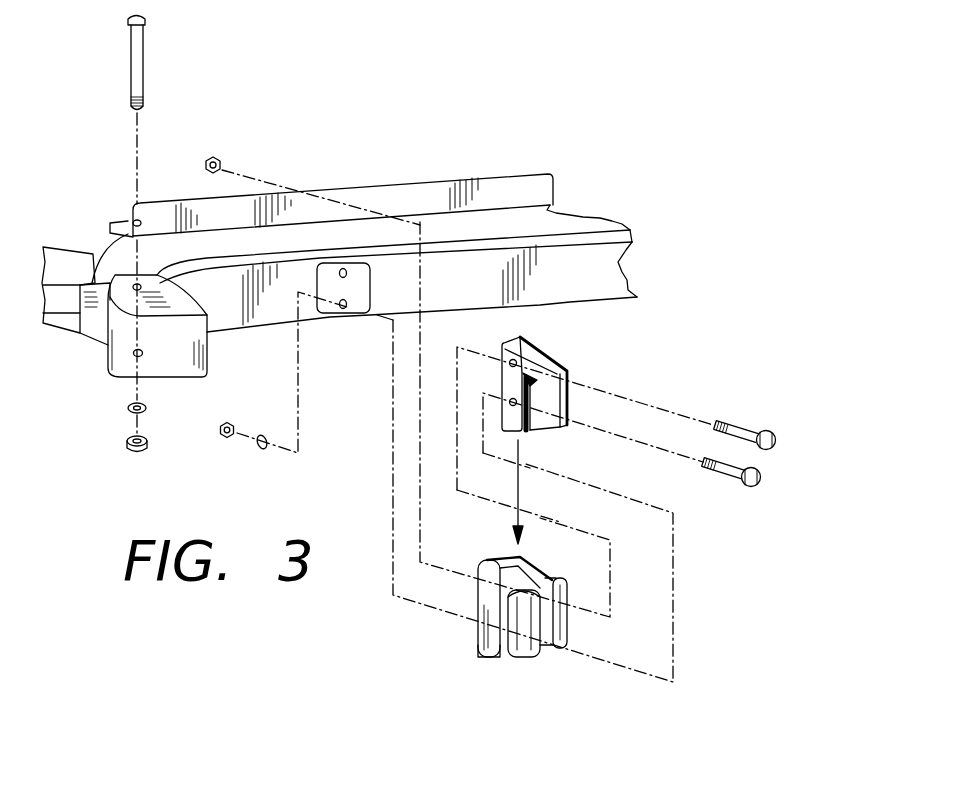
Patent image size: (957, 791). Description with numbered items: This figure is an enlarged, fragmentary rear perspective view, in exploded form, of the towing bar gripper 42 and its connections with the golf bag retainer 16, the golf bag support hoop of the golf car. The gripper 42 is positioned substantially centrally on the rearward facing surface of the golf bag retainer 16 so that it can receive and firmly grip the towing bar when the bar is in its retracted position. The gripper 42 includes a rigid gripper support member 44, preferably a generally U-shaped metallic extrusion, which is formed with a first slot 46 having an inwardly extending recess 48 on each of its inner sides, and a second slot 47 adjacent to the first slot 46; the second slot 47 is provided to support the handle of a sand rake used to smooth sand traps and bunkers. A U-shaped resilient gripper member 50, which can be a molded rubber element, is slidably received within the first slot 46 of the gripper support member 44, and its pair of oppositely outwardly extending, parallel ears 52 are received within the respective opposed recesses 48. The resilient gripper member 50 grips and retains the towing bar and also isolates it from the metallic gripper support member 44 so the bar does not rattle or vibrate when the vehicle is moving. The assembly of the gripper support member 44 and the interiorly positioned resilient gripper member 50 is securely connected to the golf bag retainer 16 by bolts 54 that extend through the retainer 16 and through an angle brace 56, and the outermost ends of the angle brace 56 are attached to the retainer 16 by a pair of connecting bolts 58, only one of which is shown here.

The golf bag retainer 16 is at (262, 313).
The towing bar gripper 42 is at (718, 588).
The gripper support member 44 is at (490, 658).
The first slot 46 is at (513, 563).
The second slot 47 is at (488, 572).
The inwardly extending recess 48 is at (513, 618).
The resilient gripper member 50 is at (513, 338).
The ears 52 is at (557, 368).
The bolts 54 is at (777, 432).
The angle brace 56 is at (173, 204).
The connecting bolts 58 is at (130, 76).